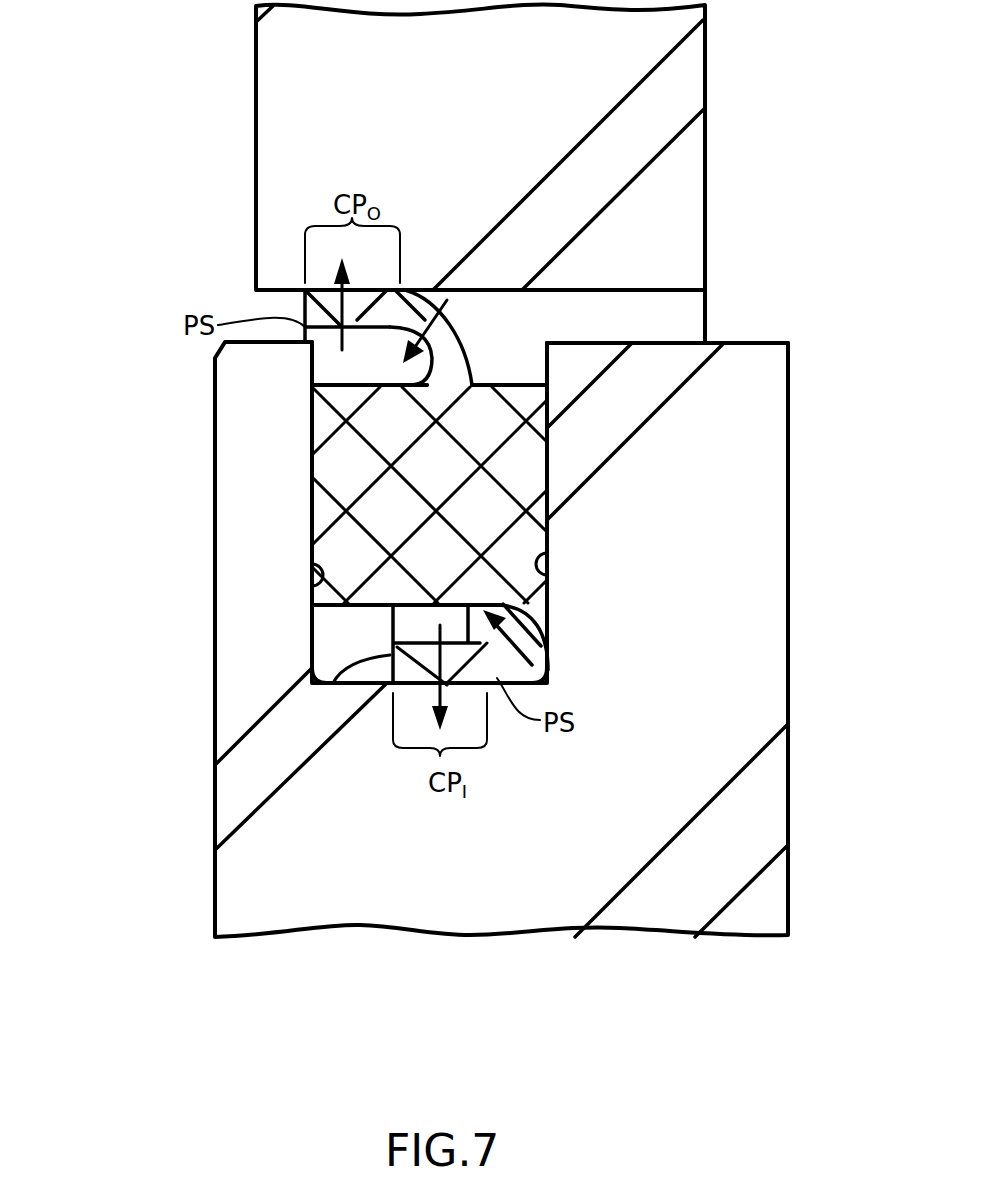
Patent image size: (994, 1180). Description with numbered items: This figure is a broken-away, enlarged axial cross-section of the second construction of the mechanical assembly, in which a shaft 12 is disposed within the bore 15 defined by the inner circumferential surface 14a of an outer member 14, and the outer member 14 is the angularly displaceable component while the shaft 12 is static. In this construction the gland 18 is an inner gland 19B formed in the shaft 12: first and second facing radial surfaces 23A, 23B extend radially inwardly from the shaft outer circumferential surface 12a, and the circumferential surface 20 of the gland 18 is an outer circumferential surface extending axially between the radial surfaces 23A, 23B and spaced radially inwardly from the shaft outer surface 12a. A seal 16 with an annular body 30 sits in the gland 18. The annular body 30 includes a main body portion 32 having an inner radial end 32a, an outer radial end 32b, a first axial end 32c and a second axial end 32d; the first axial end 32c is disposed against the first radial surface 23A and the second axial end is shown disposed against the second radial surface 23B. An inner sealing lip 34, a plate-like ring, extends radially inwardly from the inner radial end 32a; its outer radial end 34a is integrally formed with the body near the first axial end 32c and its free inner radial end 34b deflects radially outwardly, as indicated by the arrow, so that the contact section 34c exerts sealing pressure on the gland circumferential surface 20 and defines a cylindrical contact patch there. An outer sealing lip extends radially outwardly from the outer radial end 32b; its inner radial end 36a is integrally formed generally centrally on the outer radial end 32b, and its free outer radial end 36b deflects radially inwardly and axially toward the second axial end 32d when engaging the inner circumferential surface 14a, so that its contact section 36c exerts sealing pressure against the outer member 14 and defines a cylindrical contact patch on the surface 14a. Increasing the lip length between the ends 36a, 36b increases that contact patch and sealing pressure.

The shaft 12 is at (140, 750).
The outer circumferential surface 12a is at (763, 343).
The outer member 14 is at (208, 118).
The inner circumferential surface 14a is at (672, 297).
The bore 15 is at (617, 313).
The seal 16 is at (252, 432).
The gland 18 is at (520, 320).
The inner gland 19B is at (482, 335).
The circumferential surface 20 is at (387, 685).
The first radial surface 23A is at (553, 562).
The second radial surface 23B is at (312, 566).
The annular body 30 is at (297, 537).
The main body portion 32 is at (553, 536).
The inner radial end 32a is at (343, 605).
The outer radial end 32b is at (352, 383).
The first axial end 32c is at (548, 480).
The second axial end 32d is at (312, 473).
The inner sealing lip 34 is at (548, 667).
The outer radial end 34a is at (523, 615).
The inner radial end 34b is at (327, 690).
The contact section 34c is at (424, 652).
The inner radial end 36a is at (450, 380).
The outer radial end 36b is at (303, 308).
The contact section 36c is at (393, 356).